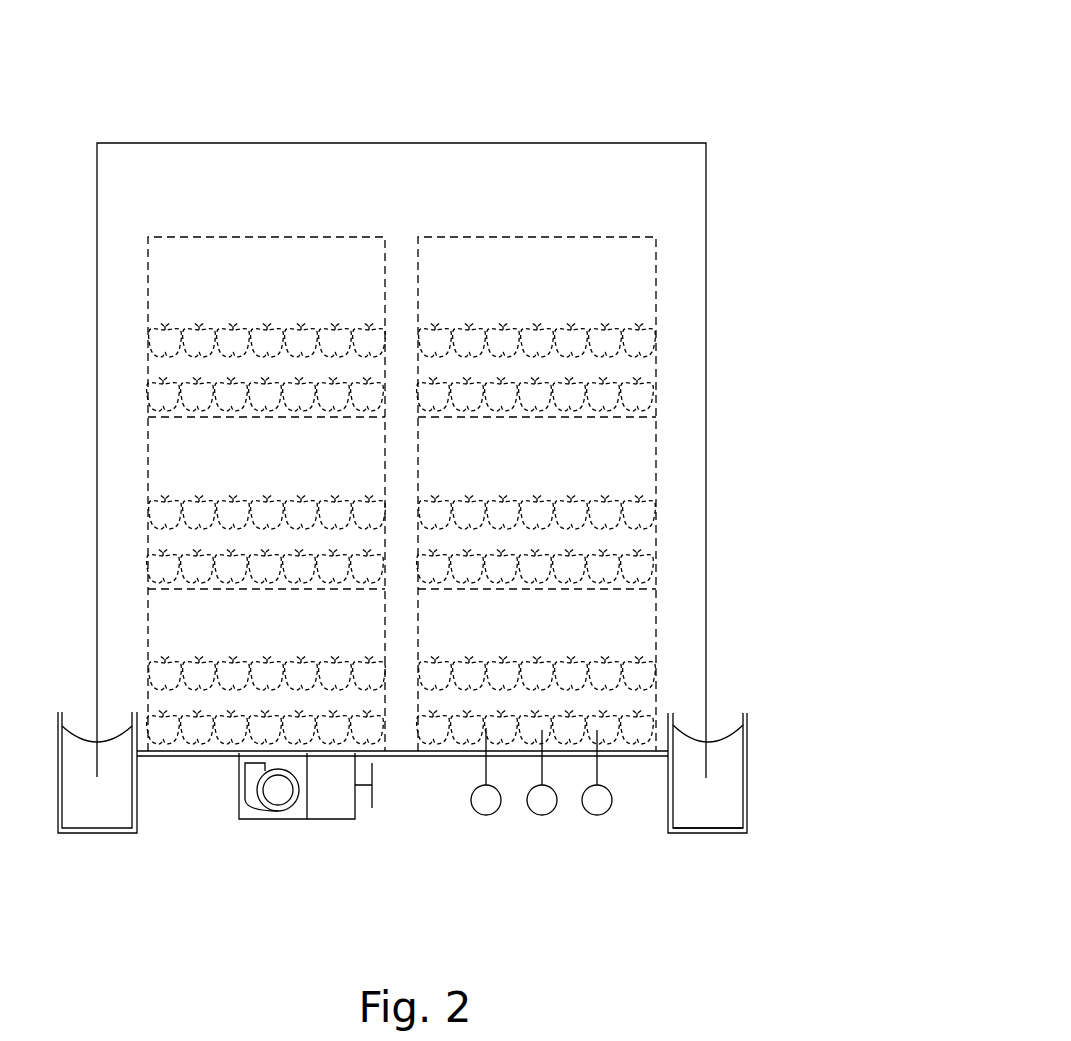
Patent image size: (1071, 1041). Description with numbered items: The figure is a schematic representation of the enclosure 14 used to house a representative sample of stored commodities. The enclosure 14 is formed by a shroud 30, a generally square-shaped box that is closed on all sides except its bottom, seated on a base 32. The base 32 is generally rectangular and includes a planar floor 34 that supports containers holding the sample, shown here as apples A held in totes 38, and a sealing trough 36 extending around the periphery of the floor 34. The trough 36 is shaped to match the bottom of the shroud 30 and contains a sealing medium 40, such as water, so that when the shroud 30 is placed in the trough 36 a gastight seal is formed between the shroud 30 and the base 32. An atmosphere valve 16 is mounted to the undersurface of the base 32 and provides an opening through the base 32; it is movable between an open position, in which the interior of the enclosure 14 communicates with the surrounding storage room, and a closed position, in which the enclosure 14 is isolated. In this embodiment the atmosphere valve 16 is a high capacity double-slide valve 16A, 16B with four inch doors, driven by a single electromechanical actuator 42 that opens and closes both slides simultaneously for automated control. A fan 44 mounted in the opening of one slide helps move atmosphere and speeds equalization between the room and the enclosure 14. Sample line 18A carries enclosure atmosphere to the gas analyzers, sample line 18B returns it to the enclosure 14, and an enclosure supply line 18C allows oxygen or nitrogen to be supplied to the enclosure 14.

The enclosure 14 is at (723, 99).
The shroud 30 is at (710, 204).
The totes 38 is at (660, 300).
The produce articles (apples) A is at (630, 340).
The base 32 is at (748, 707).
The sealing trough 36 is at (745, 743).
The sealing medium 40 is at (725, 803).
The floor 34 is at (427, 757).
The atmosphere valve 16 is at (288, 849).
The double-slide valve slide 16A is at (240, 805).
The double-slide valve slide 16B is at (328, 810).
The fan 44 is at (278, 819).
The electromechanical actuator 42 is at (365, 787).
The sample line 18A is at (608, 817).
The sample line 18B is at (549, 818).
The enclosure supply line 18C is at (491, 818).